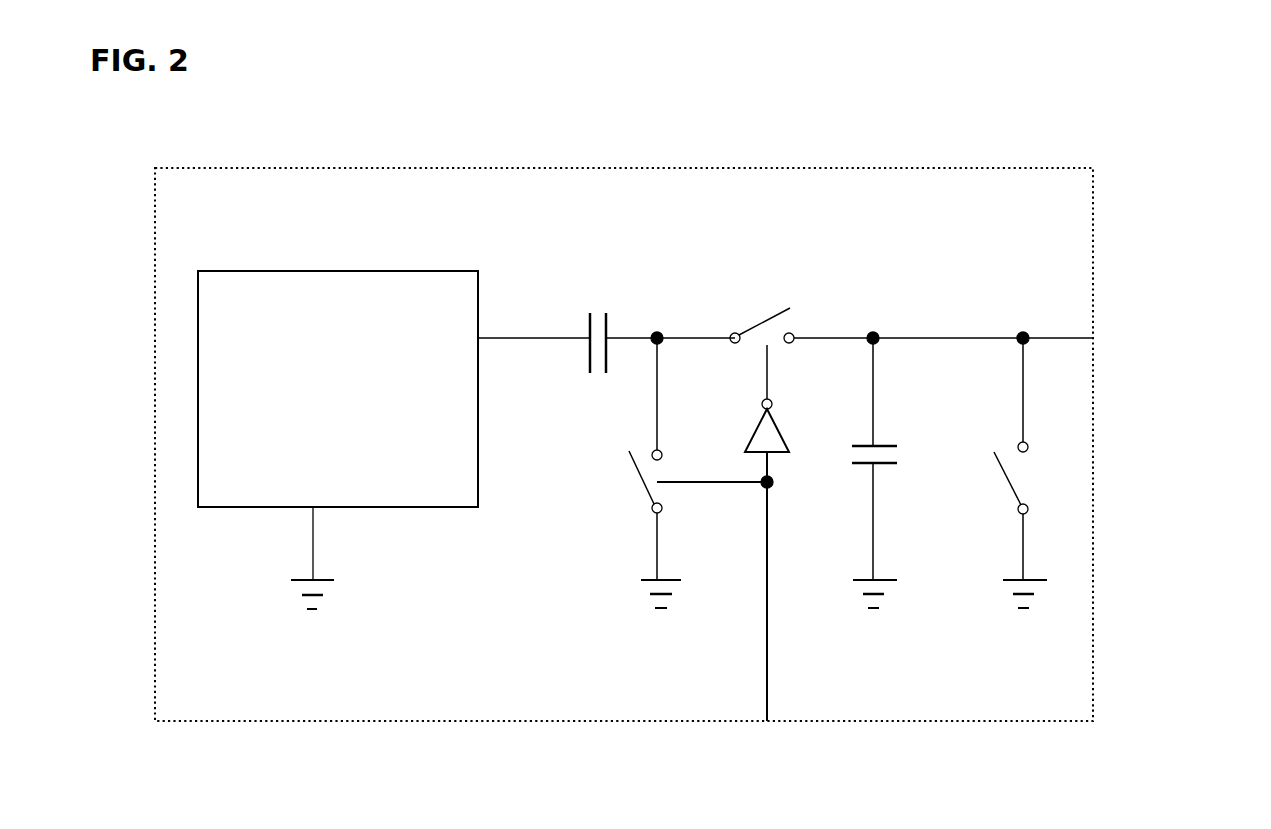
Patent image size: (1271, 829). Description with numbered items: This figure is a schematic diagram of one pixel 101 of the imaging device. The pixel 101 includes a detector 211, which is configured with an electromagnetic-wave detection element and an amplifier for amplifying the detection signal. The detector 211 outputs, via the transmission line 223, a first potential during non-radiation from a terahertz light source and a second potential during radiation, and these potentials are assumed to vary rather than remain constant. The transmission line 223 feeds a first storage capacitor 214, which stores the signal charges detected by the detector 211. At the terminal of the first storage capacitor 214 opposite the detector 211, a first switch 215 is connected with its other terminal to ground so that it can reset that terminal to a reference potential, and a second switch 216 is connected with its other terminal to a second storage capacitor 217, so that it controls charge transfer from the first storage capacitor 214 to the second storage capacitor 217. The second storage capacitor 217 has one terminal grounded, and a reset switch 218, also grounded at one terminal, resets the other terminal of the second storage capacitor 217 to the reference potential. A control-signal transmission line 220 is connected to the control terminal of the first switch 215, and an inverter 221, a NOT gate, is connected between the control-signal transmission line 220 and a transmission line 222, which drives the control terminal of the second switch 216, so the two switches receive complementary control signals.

The pixel 101 is at (1093, 498).
The detector 211 is at (335, 271).
The transmission line 223 is at (523, 338).
The storage capacitor Cs 214 is at (649, 295).
The switch SWi 216 is at (911, 280).
The switch SWs 215 is at (660, 473).
The inverter 221 is at (757, 430).
The transmission line 222 is at (773, 364).
The control-signal transmission line 220 is at (768, 630).
The storage capacitor Ci 217 is at (850, 473).
The reset switch SWr 218 is at (978, 473).